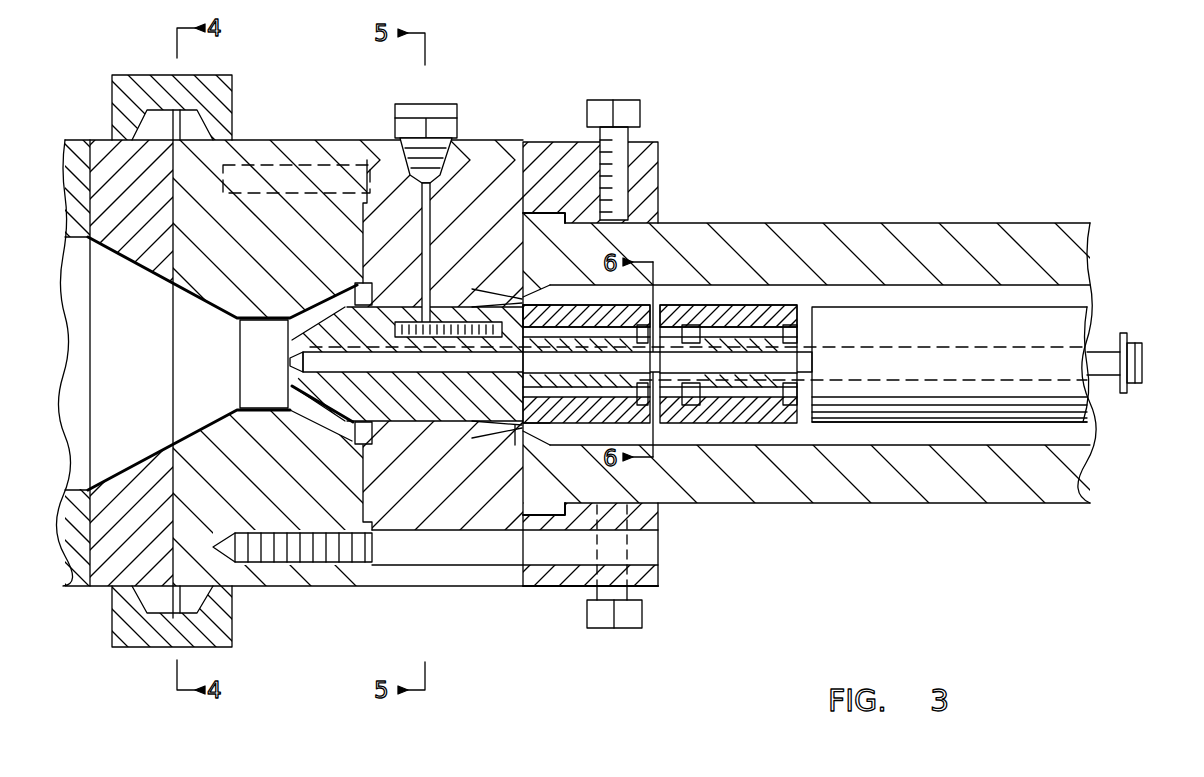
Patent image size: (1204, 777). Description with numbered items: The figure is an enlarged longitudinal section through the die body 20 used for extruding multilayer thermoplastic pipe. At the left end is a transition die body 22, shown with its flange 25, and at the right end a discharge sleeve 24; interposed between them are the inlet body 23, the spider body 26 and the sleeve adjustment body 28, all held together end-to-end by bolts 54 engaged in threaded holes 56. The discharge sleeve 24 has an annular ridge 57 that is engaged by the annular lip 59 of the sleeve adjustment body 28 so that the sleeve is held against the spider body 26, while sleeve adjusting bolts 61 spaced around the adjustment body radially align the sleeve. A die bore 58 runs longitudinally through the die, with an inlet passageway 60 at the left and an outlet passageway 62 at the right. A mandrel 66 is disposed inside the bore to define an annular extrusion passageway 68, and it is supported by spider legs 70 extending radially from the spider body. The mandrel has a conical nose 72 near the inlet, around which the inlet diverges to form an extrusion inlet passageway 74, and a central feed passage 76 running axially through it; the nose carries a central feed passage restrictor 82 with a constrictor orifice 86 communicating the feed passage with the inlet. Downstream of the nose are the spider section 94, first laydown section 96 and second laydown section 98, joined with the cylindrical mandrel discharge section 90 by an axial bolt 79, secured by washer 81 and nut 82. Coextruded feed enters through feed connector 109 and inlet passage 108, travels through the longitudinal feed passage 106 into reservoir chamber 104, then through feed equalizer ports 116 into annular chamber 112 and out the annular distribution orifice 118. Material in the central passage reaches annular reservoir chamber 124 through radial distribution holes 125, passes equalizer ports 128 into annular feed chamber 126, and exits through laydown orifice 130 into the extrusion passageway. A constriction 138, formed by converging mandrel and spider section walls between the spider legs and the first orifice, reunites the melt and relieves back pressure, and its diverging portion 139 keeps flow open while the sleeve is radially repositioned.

The die body 20 is at (500, 137).
The transition die body 22 is at (100, 588).
The inlet body 23 is at (265, 588).
The discharge sleeve 24 is at (1062, 503).
The flange 25 is at (148, 648).
The spider body 26 is at (452, 588).
The sleeve adjustment body 28 is at (540, 588).
The bolts 54 is at (337, 562).
The threaded holes 56 is at (322, 160).
The annular ridge 57 is at (538, 212).
The die bore 58 is at (160, 376).
The annular lip 59 is at (560, 215).
The inlet passageway 60 is at (134, 321).
The sleeve adjusting bolts 61 is at (624, 99).
The outlet passageway 62 is at (1092, 302).
The mandrel 66 is at (758, 306).
The annular extrusion passageway 68 is at (912, 306).
The spider legs 70 is at (352, 440).
The conical nose 72 is at (352, 290).
The extrusion inlet passageway 74 is at (305, 300).
The central feed passage 76 is at (305, 392).
The bolt 79 is at (1100, 352).
The washer 81 is at (1128, 390).
The central feed passage restrictor 82 is at (290, 351).
The constrictor orifice 86 is at (300, 365).
The mandrel discharge section 90 is at (1068, 426).
The spider section 94 is at (462, 421).
The first laydown section 96 is at (584, 424).
The second laydown section 98 is at (750, 423).
The reservoir chamber 104 is at (521, 297).
The longitudinal feed passage 106 is at (440, 322).
The inlet passage 108 is at (431, 232).
The feed connector 109 is at (428, 104).
The annular chamber 112 is at (640, 325).
The feed equalizer ports 116 is at (606, 344).
The annular distribution orifice 118 is at (666, 325).
The annular reservoir chamber 124 is at (690, 406).
The radial distribution holes 125 is at (695, 355).
The annular feed chamber 126 is at (798, 330).
The equalizer ports 128 is at (798, 385).
The laydown orifice 130 is at (812, 423).
The extrusion passageway constriction 138 is at (510, 432).
The diverging portion 139 is at (522, 447).